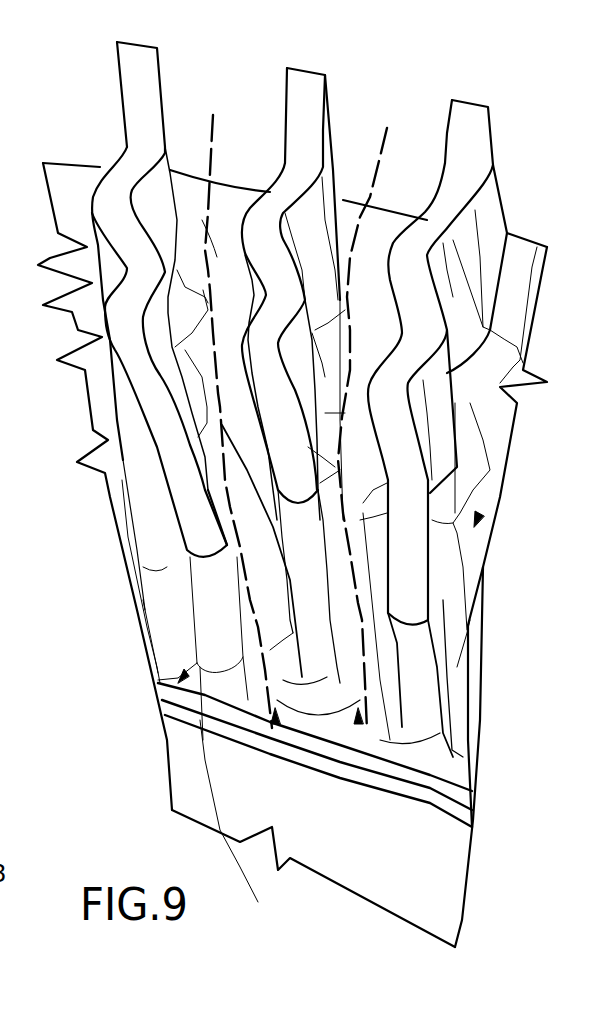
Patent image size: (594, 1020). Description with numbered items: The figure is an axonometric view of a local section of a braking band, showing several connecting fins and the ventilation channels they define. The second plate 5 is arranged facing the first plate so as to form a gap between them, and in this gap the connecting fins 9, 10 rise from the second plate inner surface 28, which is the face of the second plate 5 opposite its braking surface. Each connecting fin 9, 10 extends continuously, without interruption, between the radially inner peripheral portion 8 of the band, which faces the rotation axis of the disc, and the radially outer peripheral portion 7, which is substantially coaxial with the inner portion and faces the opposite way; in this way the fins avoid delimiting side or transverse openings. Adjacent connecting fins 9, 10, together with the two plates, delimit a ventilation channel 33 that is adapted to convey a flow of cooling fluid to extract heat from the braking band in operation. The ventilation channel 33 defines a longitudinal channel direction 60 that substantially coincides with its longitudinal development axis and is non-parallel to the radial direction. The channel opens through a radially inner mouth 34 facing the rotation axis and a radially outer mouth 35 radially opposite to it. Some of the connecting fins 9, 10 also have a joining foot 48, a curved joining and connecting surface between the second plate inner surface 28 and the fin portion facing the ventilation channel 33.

The second plate 5 is at (388, 832).
The radially outer peripheral portion 7 is at (517, 233).
The radially inner peripheral portion 8 is at (400, 805).
The connecting fin 9 is at (303, 103).
The connecting fin 10 is at (140, 84).
The second plate inner surface 28 is at (497, 500).
The ventilation channel 33 is at (355, 724).
The radially inner mouth 34 is at (260, 628).
The radially outer mouth 35 is at (232, 203).
The joining foot 48 is at (450, 710).
The longitudinal channel direction 60 is at (213, 140).